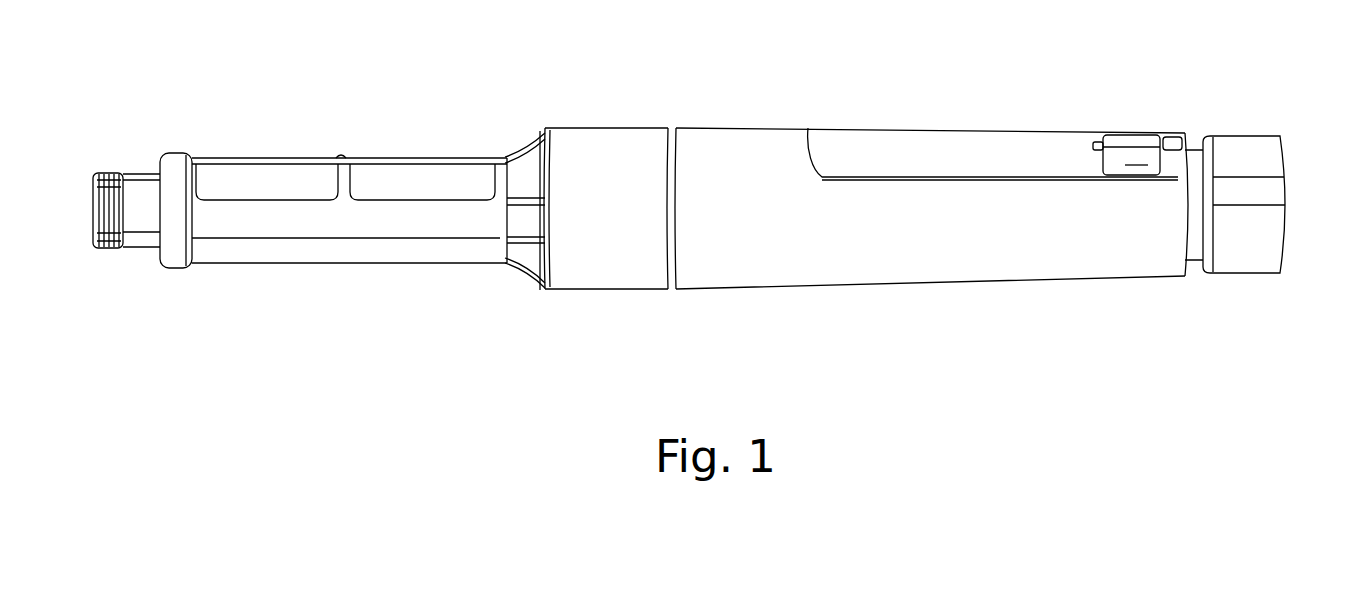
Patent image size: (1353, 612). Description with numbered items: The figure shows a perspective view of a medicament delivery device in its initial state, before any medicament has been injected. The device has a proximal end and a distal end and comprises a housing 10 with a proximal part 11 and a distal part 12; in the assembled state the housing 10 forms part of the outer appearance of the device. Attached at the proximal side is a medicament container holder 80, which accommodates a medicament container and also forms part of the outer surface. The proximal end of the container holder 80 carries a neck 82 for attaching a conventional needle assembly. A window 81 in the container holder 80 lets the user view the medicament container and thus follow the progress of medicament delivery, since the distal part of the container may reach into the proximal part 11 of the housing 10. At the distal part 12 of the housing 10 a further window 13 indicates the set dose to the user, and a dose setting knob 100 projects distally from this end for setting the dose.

The housing 10 is at (748, 170).
The proximal part of the housing 11 is at (572, 162).
The distal part of the housing 12 is at (1171, 140).
The window 13 is at (1133, 143).
The medicament container holder 80 is at (341, 158).
The window 81 is at (237, 187).
The neck 82 is at (107, 248).
The dose setting knob 100 is at (1250, 150).